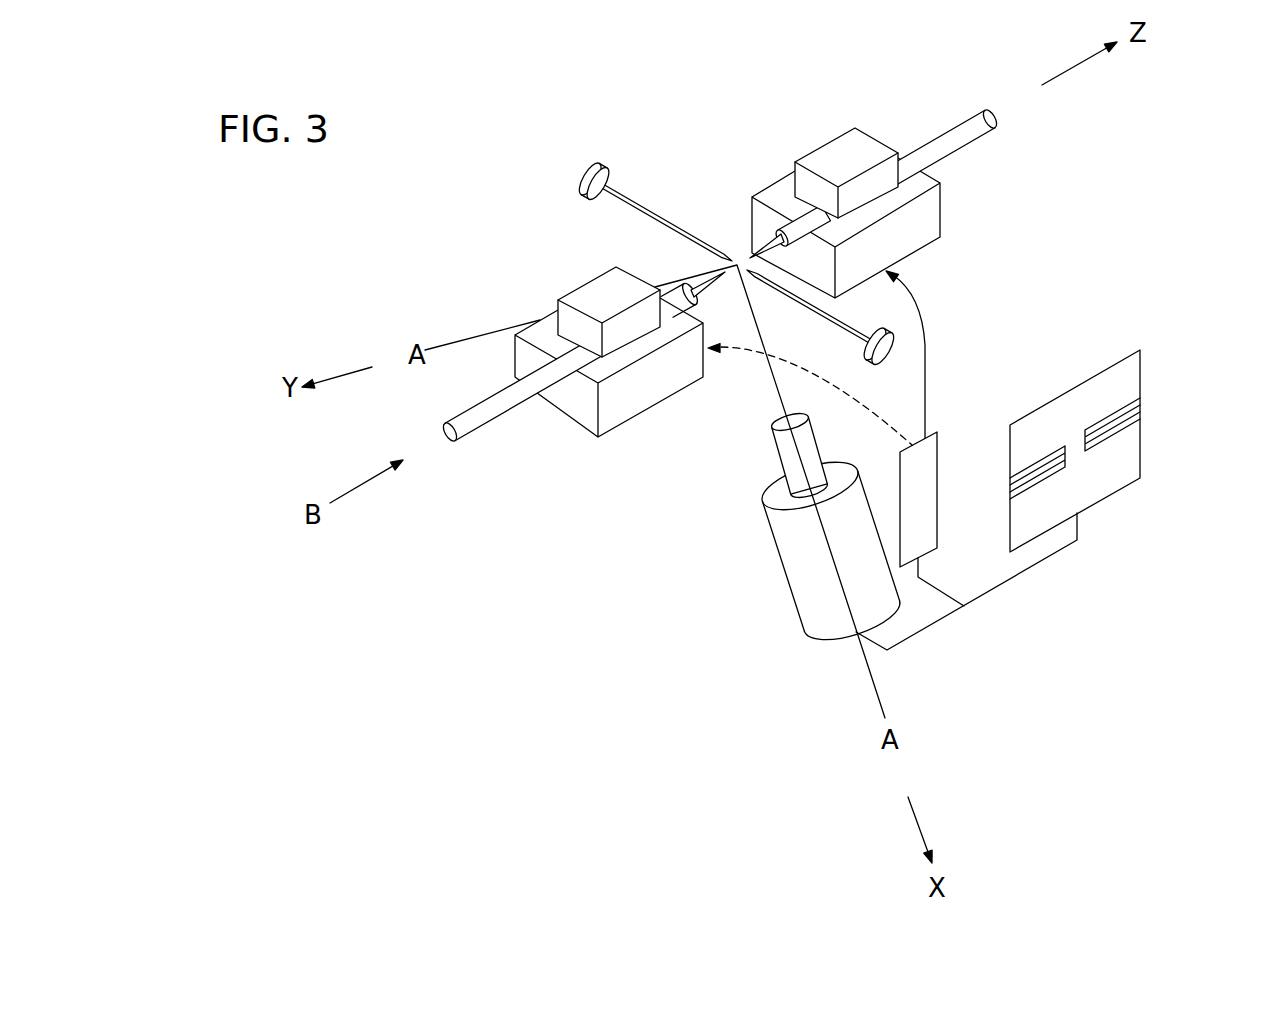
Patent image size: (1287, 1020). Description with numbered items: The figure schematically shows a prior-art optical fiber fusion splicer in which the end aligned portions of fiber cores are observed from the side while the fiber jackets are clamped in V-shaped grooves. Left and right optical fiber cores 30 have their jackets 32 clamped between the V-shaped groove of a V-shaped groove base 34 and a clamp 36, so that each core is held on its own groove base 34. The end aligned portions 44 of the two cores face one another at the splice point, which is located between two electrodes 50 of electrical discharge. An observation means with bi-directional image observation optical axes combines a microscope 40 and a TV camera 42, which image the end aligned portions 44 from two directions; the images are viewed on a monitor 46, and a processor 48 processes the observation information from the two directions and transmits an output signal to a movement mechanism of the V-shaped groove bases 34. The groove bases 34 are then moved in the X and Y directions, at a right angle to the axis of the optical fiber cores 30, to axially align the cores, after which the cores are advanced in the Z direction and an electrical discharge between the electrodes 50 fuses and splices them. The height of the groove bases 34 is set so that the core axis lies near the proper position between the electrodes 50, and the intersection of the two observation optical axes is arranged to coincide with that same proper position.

The optical fiber core 30 is at (478, 422).
The jacket 32 is at (553, 366).
The V-shaped groove base 34 is at (615, 420).
The clamp 36 is at (627, 328).
The microscope 40 is at (780, 450).
The TV camera 42 is at (808, 607).
The end aligned portion 44 is at (722, 265).
The monitor 46 is at (1130, 452).
The processor 48 is at (925, 496).
The electrode 50 is at (637, 200).